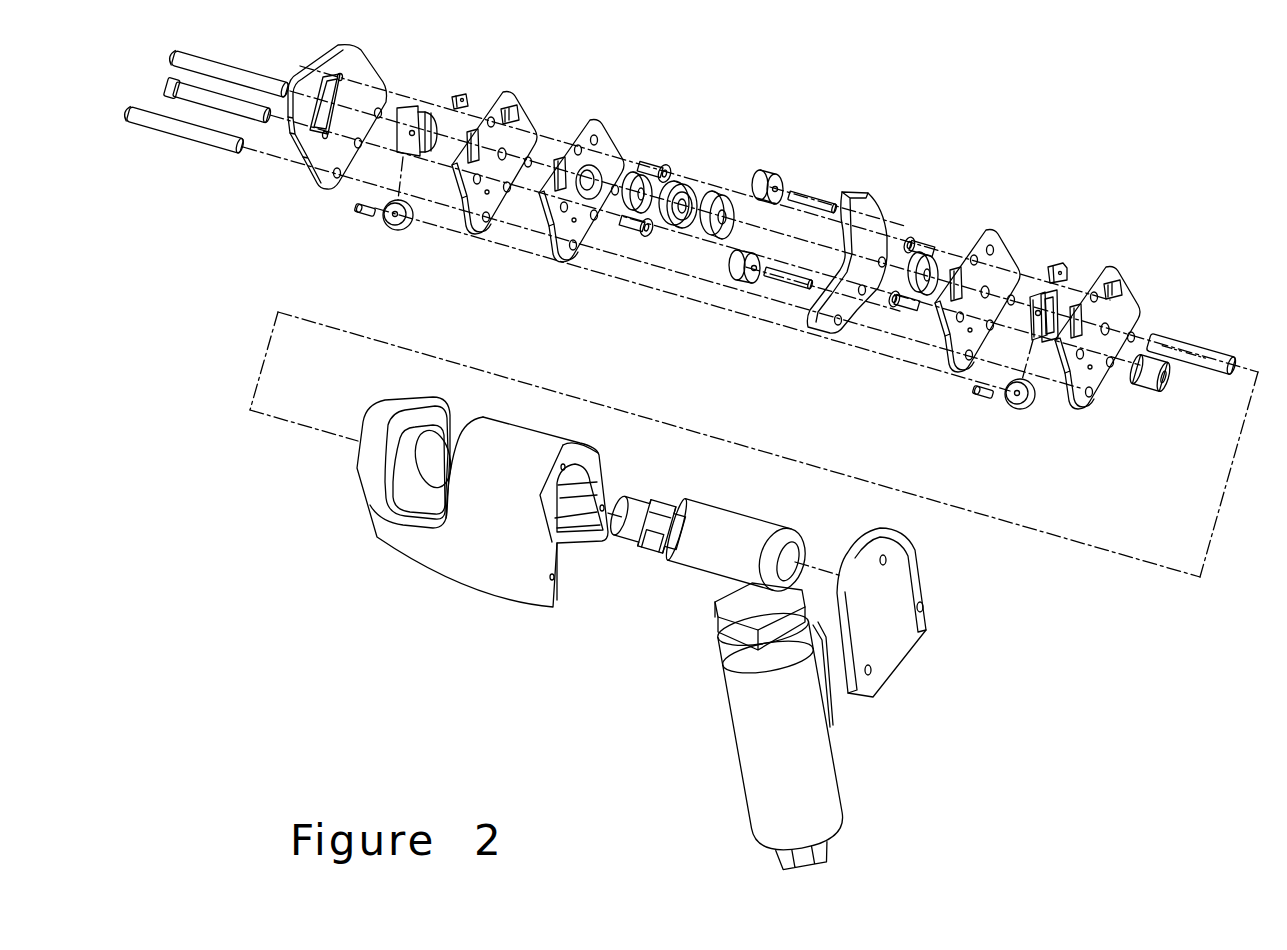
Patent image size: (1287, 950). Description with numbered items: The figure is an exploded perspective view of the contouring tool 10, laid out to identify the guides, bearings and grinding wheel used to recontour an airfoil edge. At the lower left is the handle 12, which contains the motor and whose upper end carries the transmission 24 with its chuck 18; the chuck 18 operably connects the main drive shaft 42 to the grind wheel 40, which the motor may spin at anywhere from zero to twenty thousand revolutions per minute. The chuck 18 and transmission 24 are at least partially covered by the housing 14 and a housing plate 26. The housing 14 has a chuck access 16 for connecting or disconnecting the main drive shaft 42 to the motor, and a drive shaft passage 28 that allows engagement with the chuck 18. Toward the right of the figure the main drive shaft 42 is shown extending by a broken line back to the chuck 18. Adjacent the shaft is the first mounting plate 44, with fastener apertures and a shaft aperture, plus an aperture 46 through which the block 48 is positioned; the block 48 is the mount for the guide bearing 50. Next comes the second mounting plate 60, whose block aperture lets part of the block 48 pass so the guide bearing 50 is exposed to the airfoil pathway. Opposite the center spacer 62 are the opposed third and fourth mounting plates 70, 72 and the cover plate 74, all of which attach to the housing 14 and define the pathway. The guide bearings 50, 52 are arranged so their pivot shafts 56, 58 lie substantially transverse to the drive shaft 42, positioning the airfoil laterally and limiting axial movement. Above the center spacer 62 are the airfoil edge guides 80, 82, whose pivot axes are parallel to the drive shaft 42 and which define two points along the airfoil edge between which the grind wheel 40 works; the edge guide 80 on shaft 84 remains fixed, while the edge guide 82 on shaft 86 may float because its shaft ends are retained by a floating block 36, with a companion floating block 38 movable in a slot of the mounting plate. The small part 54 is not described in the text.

The contouring tool 10 is at (1097, 131).
The handle 12 is at (752, 728).
The housing 14 is at (493, 563).
The chuck access 16 is at (435, 502).
The chuck 18 is at (662, 493).
The transmission 24 is at (770, 514).
The housing plate 26 is at (897, 588).
The drive shaft passage 28 is at (430, 452).
The floating block 36 is at (455, 92).
The floating block 38 is at (1060, 268).
The grind wheel 40 is at (732, 196).
The main drive shaft 42 is at (1212, 347).
The first mounting plate 44 is at (1136, 277).
The aperture 46 is at (1063, 345).
The block 48 is at (1033, 295).
The guide bearing 50 is at (1006, 400).
The guide bearing 52 is at (390, 225).
The bracket 54 is at (400, 108).
The pivot shaft 56 is at (972, 389).
The pivot shaft 58 is at (355, 210).
The second mounting plate 60 is at (990, 231).
The center spacer 62 is at (871, 192).
The third mounting plate 70 is at (592, 120).
The fourth mounting plate 72 is at (512, 96).
The cover plate 74 is at (357, 50).
The airfoil edge guide 80 is at (742, 283).
The airfoil edge guide 82 is at (768, 173).
The shaft 84 is at (782, 287).
The shaft 86 is at (812, 197).